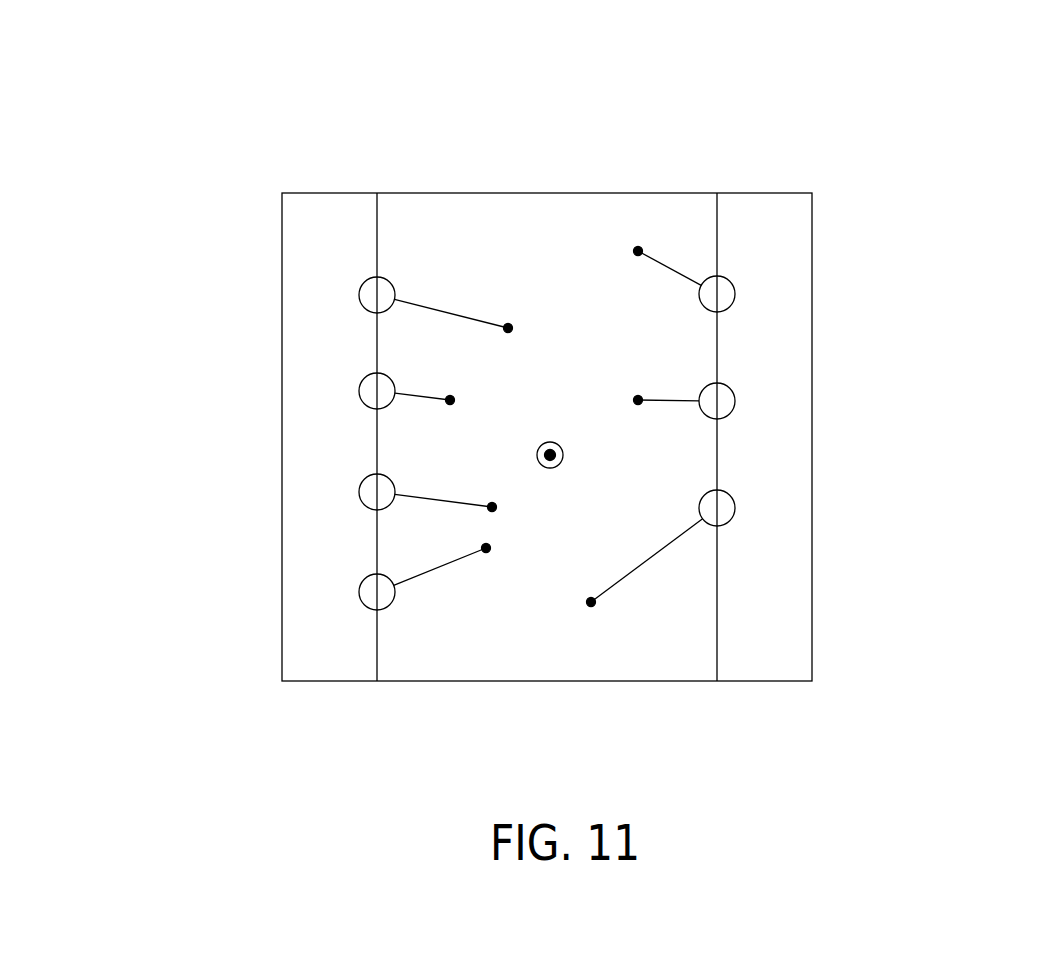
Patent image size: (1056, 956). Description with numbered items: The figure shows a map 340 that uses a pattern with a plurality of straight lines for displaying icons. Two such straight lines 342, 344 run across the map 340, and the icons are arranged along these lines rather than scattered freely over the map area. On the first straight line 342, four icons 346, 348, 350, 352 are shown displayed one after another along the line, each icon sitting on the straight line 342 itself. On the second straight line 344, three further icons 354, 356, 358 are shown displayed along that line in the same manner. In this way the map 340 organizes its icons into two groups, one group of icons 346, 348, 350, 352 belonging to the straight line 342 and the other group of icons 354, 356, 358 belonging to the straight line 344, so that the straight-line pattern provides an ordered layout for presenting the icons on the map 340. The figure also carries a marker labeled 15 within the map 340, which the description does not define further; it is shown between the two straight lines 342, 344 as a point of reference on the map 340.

The map 340 is at (877, 128).
The straight line 342 is at (377, 227).
The straight line 344 is at (717, 227).
The icon 346 is at (359, 288).
The icon 348 is at (359, 384).
The icon 350 is at (359, 485).
The icon 352 is at (359, 586).
The icon 354 is at (735, 288).
The icon 356 is at (735, 395).
The icon 358 is at (735, 502).
The indicator / reference point 15 is at (550, 442).